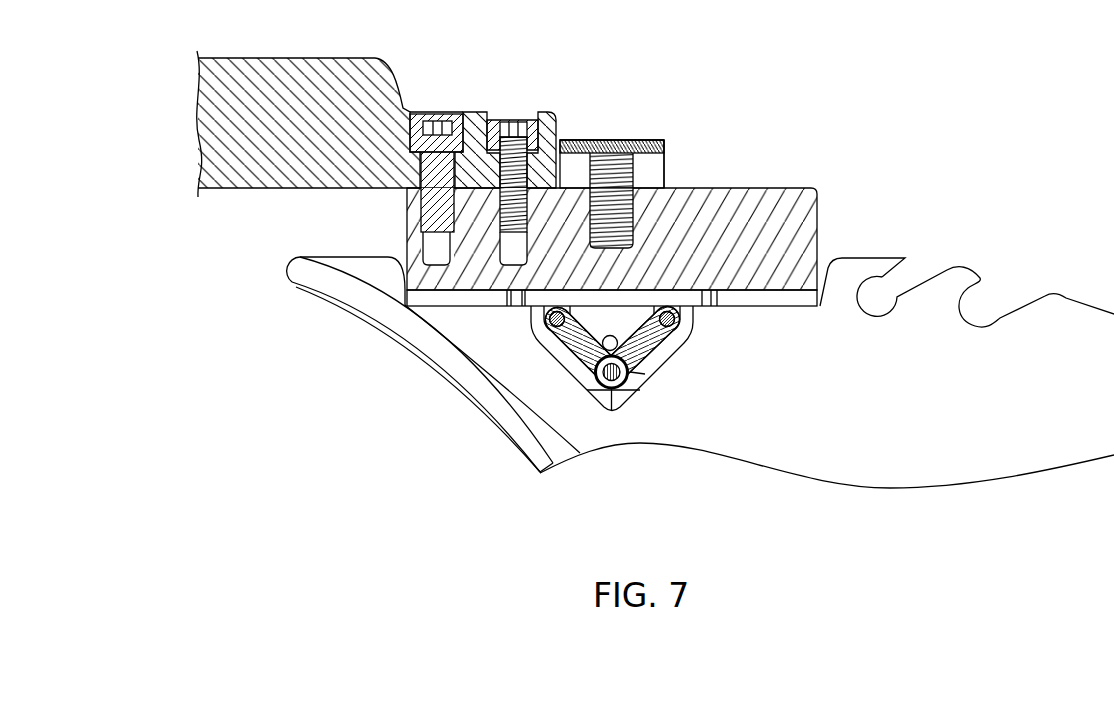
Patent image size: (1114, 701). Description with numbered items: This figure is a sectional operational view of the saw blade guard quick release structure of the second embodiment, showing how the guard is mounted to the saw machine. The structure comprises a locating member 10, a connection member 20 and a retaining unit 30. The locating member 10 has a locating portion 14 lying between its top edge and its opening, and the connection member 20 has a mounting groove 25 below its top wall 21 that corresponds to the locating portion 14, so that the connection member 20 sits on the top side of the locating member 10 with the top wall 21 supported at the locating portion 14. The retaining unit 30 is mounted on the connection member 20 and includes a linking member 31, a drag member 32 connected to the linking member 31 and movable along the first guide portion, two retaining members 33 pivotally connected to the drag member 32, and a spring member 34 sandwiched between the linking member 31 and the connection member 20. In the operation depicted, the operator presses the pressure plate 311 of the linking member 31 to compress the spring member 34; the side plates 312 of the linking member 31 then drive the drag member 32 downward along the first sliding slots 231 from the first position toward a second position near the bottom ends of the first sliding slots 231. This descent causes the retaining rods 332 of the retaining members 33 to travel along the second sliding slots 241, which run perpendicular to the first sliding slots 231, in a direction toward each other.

The locating member 10 is at (1078, 332).
The locating portion 14 is at (790, 306).
The connection member 20 is at (787, 190).
The top wall 21 is at (788, 228).
The mounting groove 25 is at (788, 277).
The retaining unit 30 is at (611, 128).
The linking member 31 is at (639, 140).
The pressure plate 311 is at (663, 140).
The side plates 312 is at (657, 163).
The spring member 34 is at (632, 183).
The second sliding slots 241 is at (683, 306).
The drag member 32 is at (612, 410).
The retaining members 33 is at (660, 350).
The retaining rods 332 is at (676, 326).
The first sliding slots 231 is at (637, 357).